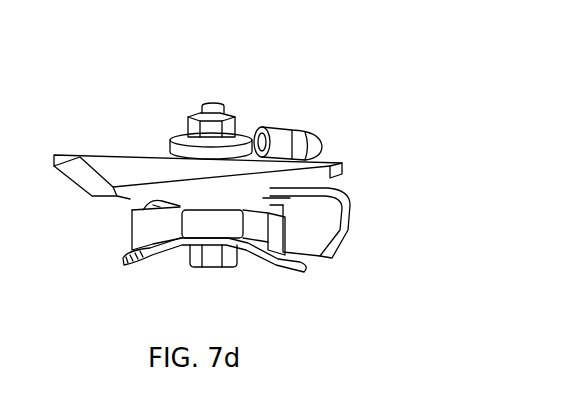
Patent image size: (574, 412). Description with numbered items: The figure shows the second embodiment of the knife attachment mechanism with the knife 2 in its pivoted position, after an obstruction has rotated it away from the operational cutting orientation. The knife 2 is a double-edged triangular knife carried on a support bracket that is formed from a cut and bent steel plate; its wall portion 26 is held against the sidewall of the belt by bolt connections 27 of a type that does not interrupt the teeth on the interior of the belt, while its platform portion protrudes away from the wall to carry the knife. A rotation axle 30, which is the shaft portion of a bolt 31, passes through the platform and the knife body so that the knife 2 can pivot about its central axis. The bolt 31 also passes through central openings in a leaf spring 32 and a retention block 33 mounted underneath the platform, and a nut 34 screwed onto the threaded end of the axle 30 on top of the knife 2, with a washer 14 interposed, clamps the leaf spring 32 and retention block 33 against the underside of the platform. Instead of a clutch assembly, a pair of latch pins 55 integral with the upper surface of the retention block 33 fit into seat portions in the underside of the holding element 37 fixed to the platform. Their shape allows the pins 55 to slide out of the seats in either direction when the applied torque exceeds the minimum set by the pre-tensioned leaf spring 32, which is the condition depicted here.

The knife 2 is at (122, 162).
The washer 14 is at (170, 150).
The wall portion 26 is at (318, 228).
The bolt connections 27 is at (280, 138).
The rotation axle 30 is at (213, 105).
The bolt 31 is at (210, 262).
The leaf spring 32 is at (130, 267).
The retention block 33 is at (140, 228).
The nut 34 is at (187, 123).
The holding element 37 is at (290, 198).
The latch pins 55 is at (153, 205).